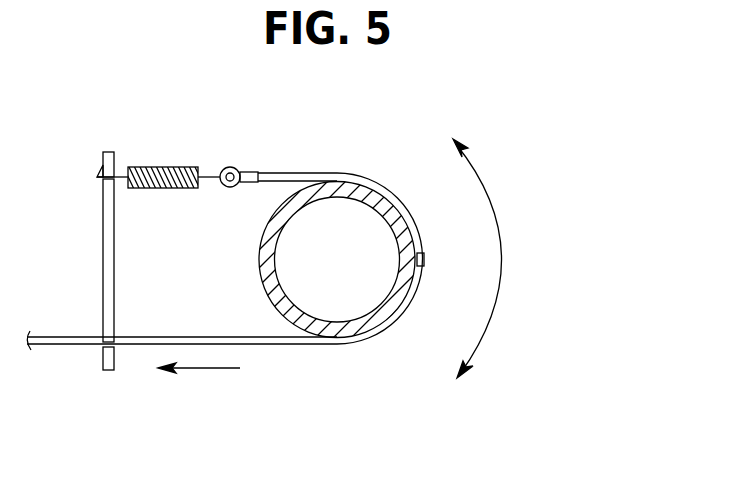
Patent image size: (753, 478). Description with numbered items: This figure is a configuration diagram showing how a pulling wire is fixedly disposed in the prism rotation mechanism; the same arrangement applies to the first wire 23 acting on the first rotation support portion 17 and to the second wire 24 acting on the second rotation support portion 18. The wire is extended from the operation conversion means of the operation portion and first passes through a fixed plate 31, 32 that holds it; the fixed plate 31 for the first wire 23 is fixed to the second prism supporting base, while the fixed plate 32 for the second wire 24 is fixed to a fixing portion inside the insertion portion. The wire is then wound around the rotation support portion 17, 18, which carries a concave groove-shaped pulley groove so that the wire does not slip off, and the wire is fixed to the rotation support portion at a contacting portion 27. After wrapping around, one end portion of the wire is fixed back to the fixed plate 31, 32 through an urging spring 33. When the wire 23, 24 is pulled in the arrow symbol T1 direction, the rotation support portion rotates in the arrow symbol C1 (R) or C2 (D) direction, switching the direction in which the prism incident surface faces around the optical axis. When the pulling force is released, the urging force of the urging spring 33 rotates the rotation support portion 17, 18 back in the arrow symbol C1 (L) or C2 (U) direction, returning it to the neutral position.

The first rotation support portion 17 is at (375, 231).
The second rotation support portion 18 is at (364, 182).
The first wire 23 is at (225, 226).
The second wire 24 is at (308, 173).
The contacting portion 27 is at (425, 262).
The fixed plate 31 is at (90, 230).
The fixed plate 32 is at (108, 157).
The urging spring 33 is at (178, 167).
The pulling direction T1 is at (190, 370).
The rotational direction of first rotation support portion C1 is at (511, 258).
The rotational direction of second rotation support portion C2 is at (477, 258).